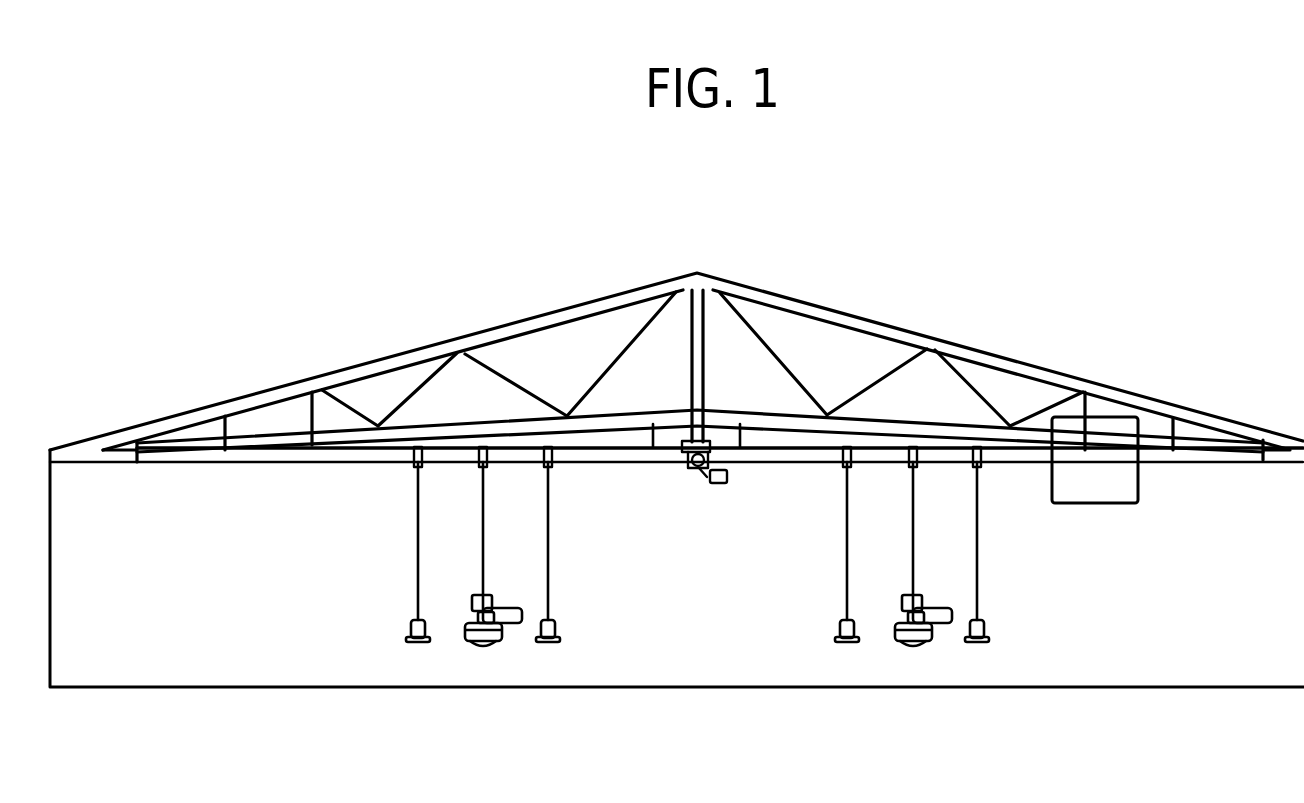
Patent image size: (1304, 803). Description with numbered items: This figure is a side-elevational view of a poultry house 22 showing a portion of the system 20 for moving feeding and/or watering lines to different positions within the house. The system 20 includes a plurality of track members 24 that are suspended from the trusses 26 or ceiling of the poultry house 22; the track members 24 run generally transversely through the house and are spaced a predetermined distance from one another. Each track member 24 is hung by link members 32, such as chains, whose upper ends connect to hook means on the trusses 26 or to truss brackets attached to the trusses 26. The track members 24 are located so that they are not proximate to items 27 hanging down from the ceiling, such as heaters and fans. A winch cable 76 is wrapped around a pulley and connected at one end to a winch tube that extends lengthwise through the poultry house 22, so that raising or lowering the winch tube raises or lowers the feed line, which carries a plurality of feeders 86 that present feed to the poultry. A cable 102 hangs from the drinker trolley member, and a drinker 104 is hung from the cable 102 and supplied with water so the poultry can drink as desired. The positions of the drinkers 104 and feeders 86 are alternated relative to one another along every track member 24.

The system 20 is at (687, 655).
The poultry house 22 is at (1074, 360).
The track member 24 is at (368, 460).
The trusses 26 is at (346, 437).
The items hanging down from the ceiling 27 is at (1100, 490).
The link members 32 is at (652, 436).
The winch cable 76 is at (485, 542).
The feeders 86 is at (488, 648).
The cable 102 is at (418, 557).
The drinker 104 is at (395, 647).